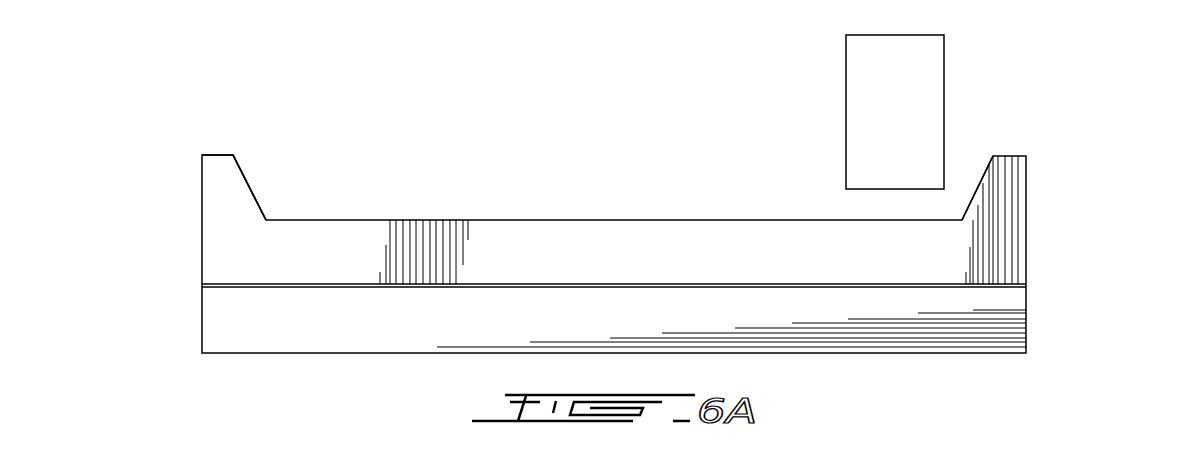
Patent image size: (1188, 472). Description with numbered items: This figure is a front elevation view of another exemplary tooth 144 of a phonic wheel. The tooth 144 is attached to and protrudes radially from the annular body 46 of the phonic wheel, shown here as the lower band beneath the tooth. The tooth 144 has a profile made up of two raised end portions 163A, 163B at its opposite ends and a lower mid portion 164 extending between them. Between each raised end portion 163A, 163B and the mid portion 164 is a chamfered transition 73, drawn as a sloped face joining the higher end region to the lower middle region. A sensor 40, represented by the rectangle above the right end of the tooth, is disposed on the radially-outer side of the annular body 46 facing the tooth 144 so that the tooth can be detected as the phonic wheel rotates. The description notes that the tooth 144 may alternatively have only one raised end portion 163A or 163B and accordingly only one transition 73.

The sensor 40 is at (883, 86).
The annular body 46 is at (992, 313).
The chamfered transition 73 is at (249, 187).
The tooth 144 is at (990, 260).
The raised end portion 163A is at (1005, 178).
The raised end portion 163B is at (225, 176).
The mid portion 164 is at (508, 240).